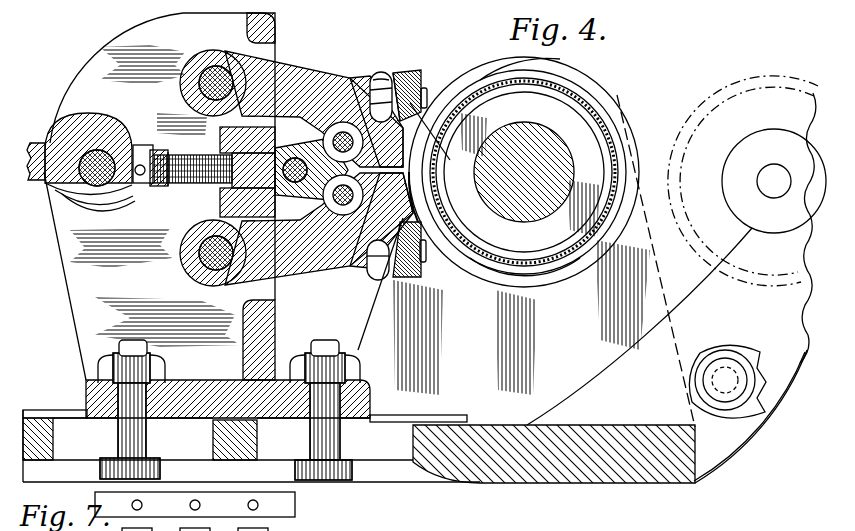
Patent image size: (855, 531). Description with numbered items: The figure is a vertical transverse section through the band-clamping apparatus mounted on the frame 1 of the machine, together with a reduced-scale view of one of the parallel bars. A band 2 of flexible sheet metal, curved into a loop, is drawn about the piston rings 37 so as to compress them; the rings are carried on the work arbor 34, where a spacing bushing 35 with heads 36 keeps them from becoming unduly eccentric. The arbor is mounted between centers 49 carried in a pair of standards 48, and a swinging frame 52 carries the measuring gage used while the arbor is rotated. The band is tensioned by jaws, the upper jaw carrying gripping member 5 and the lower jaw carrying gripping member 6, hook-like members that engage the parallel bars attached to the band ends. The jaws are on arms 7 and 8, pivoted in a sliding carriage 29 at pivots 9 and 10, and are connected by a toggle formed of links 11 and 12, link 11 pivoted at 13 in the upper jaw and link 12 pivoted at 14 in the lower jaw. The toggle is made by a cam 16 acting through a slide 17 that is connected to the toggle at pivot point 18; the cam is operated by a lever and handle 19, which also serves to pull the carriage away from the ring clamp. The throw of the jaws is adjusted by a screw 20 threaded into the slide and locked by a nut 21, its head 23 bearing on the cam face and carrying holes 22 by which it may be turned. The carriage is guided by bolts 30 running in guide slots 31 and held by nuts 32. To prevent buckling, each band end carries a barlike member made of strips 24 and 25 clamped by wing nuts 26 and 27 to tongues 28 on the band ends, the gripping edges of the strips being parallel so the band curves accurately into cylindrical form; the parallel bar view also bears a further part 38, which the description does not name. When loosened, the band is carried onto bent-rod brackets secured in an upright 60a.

In FIG. 4, the frame 1 is at (663, 467).
In FIG. 4, the band 2 is at (626, 124).
In FIG. 4, the gripping member 5 is at (381, 80).
In FIG. 4, the gripping member 6 is at (418, 206).
In FIG. 4, the arm 7 is at (283, 80).
In FIG. 4, the arm 8 is at (302, 264).
In FIG. 4, the pivot 9 is at (215, 75).
In FIG. 4, the pivot 10 is at (212, 262).
In FIG. 4, the link 11 is at (335, 130).
In FIG. 4, the link 12 is at (322, 201).
In FIG. 4, the pivot 13 is at (352, 128).
In FIG. 4, the pivot 14 is at (338, 257).
In FIG. 4, the cam 16 is at (98, 130).
In FIG. 4, the slide 17 is at (180, 152).
In FIG. 4, the pivot point 18 is at (292, 157).
In FIG. 4, the lever and handle 19 is at (37, 143).
In FIG. 4, the screw 20 is at (152, 190).
In FIG. 4, the nut 21 is at (167, 182).
In FIG. 4, the holes 22 is at (141, 150).
In FIG. 4, the head 23 is at (106, 204).
In FIG. 4, the strip 24 is at (421, 86).
In FIG. 7, the strip 24 is at (297, 511).
In FIG. 4, the strip 25 is at (405, 73).
In FIG. 4, the wing nut 26 is at (373, 76).
In FIG. 4, the wing nut 27 is at (372, 274).
In FIG. 7, the wing nut 27 is at (269, 528).
In FIG. 4, the tongue 28 is at (446, 301).
In FIG. 4, the sliding carriage 29 is at (70, 297).
In FIG. 4, the bolt 30 is at (147, 432).
In FIG. 4, the guide slot 31 is at (90, 440).
In FIG. 4, the nut 32 is at (117, 367).
In FIG. 4, the work arbor 34 is at (553, 141).
In FIG. 4, the spacing bushing 35 is at (544, 276).
In FIG. 4, the head 36 is at (590, 133).
In FIG. 4, the rings 37 is at (618, 220).
In FIG. 7, the strip 38 is at (551, 521).
In FIG. 4, the standard 48 is at (793, 360).
In FIG. 4, the center 49 is at (778, 172).
In FIG. 4, the swinging frame 52 is at (770, 364).
In FIG. 4, the upright 60a is at (512, 62).